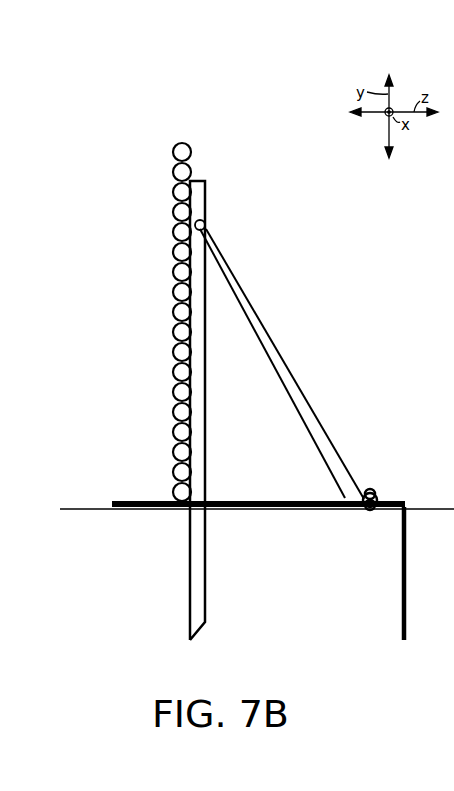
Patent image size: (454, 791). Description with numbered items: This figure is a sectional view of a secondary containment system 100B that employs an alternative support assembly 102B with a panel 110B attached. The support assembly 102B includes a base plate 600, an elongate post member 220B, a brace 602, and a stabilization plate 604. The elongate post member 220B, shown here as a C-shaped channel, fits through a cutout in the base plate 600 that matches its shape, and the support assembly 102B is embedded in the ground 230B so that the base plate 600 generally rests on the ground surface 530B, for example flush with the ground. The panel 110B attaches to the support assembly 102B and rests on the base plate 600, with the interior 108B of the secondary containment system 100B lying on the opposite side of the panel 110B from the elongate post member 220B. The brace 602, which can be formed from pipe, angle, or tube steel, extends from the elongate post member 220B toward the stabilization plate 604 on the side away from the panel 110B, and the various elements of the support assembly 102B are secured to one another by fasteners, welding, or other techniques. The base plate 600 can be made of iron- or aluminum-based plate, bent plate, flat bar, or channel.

The secondary containment system 100B is at (99, 112).
The panel 110B is at (178, 148).
The elongate post member 220B is at (205, 600).
The support assembly 102B is at (302, 278).
The brace 602 is at (305, 400).
The base plate 600 is at (143, 503).
The stabilization plate 604 is at (400, 580).
The ground surface 530B is at (75, 511).
The interior 108B is at (100, 359).
The ground 230B is at (112, 594).